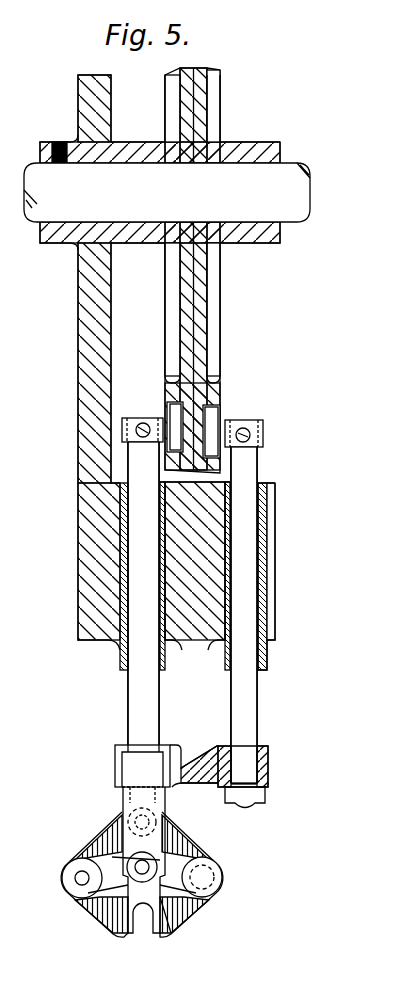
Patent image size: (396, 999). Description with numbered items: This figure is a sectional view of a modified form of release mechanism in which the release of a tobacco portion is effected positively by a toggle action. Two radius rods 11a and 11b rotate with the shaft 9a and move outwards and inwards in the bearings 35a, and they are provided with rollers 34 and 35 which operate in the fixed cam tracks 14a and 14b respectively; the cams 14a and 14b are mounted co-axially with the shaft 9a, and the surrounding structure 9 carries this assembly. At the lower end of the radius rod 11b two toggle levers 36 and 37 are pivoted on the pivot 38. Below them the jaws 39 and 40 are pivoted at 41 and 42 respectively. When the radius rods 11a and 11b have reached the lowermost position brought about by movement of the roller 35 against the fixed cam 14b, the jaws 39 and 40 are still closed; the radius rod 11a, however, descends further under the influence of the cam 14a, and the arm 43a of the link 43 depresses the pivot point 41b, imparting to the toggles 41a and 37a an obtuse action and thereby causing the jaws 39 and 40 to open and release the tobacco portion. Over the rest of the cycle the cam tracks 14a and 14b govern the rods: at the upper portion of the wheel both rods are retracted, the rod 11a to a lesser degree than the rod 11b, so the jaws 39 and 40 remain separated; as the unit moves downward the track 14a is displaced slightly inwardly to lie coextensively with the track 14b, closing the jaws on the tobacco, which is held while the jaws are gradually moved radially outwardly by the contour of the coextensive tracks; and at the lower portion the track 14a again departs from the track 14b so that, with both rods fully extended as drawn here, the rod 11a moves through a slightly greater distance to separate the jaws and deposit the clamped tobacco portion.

The housing 9 is at (78, 387).
The shaft 9a is at (167, 192).
The radius rod 11a is at (247, 515).
The radius rod 11b is at (143, 522).
The fixed cam track 14a is at (215, 415).
The fixed cam track 14b is at (173, 400).
The roller 34 is at (223, 432).
The roller 35 is at (175, 412).
The bearings 35a is at (122, 590).
The toggle lever 36 is at (110, 843).
The toggle lever 37 is at (160, 870).
The toggle 37a is at (167, 888).
The pivot 38 is at (126, 808).
The jaw 39 is at (100, 915).
The jaw 40 is at (180, 924).
The pivot 41 is at (82, 878).
The toggle 41a is at (112, 857).
The pivot point 41b is at (157, 866).
The pivot 42 is at (222, 873).
The link 43 is at (180, 760).
The arm 43a is at (165, 798).